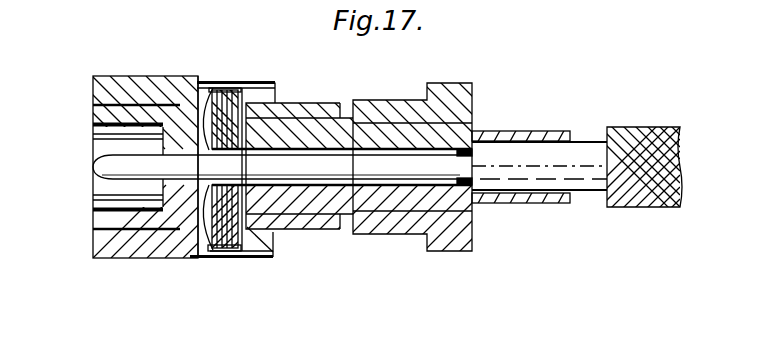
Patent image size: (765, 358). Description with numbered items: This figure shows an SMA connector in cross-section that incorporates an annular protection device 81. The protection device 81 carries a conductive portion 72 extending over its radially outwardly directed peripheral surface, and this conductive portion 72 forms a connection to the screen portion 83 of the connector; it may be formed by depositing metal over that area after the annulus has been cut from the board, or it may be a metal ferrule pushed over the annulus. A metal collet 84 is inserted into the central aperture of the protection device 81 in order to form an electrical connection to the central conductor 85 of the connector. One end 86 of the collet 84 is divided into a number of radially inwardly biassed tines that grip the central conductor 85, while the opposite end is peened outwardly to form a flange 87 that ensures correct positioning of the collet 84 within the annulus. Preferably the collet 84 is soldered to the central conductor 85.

The conductive portion 72 is at (211, 86).
The protection device 81 is at (230, 252).
The screen portion 83 is at (173, 90).
The metal collet 84 is at (191, 230).
The central conductor 85 is at (162, 232).
The end of collet 86 is at (96, 131).
The flange 87 is at (275, 257).